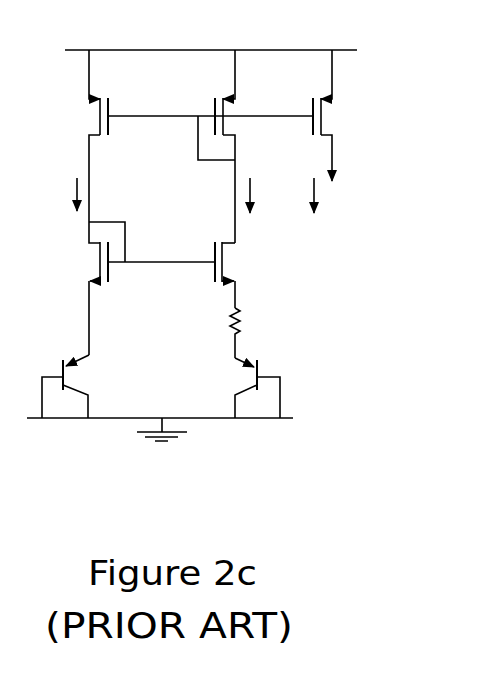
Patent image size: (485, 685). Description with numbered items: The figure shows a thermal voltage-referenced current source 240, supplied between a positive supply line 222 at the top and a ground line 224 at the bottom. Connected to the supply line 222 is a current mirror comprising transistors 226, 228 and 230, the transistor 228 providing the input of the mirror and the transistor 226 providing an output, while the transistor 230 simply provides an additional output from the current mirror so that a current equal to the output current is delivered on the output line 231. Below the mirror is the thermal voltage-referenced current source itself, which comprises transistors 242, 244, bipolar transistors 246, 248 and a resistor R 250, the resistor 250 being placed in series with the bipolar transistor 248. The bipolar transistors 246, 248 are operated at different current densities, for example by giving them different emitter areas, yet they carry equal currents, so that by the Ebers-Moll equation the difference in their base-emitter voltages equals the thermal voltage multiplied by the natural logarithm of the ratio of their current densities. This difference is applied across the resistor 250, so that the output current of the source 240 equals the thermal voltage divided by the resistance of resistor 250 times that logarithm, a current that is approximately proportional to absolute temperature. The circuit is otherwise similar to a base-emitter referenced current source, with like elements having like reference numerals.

The positive supply line 222 is at (93, 50).
The ground line 224 is at (113, 420).
The transistor 226 is at (73, 146).
The transistor 228 is at (187, 148).
The transistor 230 is at (307, 150).
The output line 231 is at (336, 153).
The thermal voltage-referenced current source 240 is at (112, 482).
The transistor 242 is at (68, 282).
The transistor 244 is at (203, 282).
The bipolar transistor 246 is at (91, 368).
The bipolar transistor 248 is at (223, 368).
The resistor R 250 is at (246, 319).